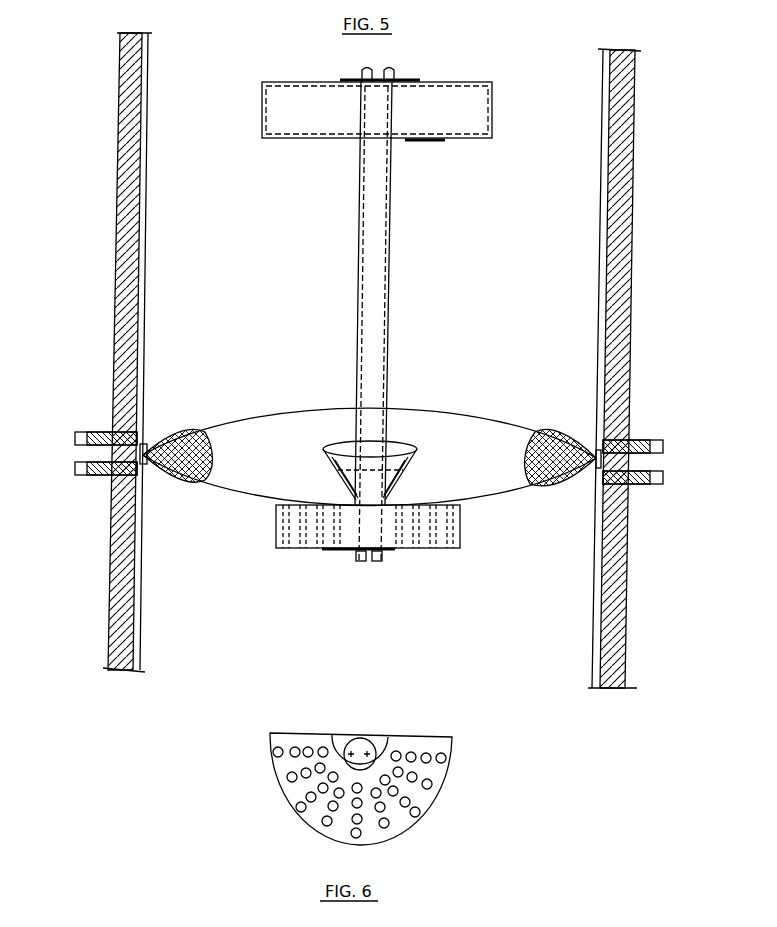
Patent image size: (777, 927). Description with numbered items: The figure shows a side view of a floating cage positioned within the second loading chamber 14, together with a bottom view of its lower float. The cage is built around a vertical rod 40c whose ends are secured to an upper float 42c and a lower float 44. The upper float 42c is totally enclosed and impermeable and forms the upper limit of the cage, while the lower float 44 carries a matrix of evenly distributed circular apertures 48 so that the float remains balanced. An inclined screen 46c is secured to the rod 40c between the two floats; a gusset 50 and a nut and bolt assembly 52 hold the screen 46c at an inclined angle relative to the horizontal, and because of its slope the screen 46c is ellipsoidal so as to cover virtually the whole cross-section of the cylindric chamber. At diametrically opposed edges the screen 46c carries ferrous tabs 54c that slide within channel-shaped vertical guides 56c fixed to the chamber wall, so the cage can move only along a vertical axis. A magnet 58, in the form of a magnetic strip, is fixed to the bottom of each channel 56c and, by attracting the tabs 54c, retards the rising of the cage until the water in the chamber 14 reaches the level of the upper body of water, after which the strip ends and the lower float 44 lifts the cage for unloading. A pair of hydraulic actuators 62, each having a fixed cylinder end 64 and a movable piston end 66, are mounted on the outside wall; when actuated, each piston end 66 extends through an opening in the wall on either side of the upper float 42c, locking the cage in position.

In FIG. 5, the second loading chamber 14 is at (372, 360).
In FIG. 5, the channel-shaped vertical guide 56c is at (147, 82).
In FIG. 5, the magnet 58 is at (140, 597).
In FIG. 5, the upper float 42c is at (408, 82).
In FIG. 5, the vertical rod 40c is at (388, 214).
In FIG. 5, the inclined screen 46c is at (470, 420).
In FIG. 5, the ferrous tab 54c is at (143, 442).
In FIG. 5, the nut and bolt assembly 52 is at (392, 445).
In FIG. 5, the gusset 50 is at (340, 467).
In FIG. 5, the circular aperture 48 is at (279, 549).
In FIG. 6, the circular aperture 48 is at (432, 787).
In FIG. 5, the lower float 44 is at (332, 550).
In FIG. 6, the lower float 44 is at (420, 825).
In FIG. 5, the hydraulic actuator 62 is at (370, 445).
In FIG. 5, the fixed cylinder end 64 is at (365, 445).
In FIG. 5, the movable piston end 66 is at (97, 430).